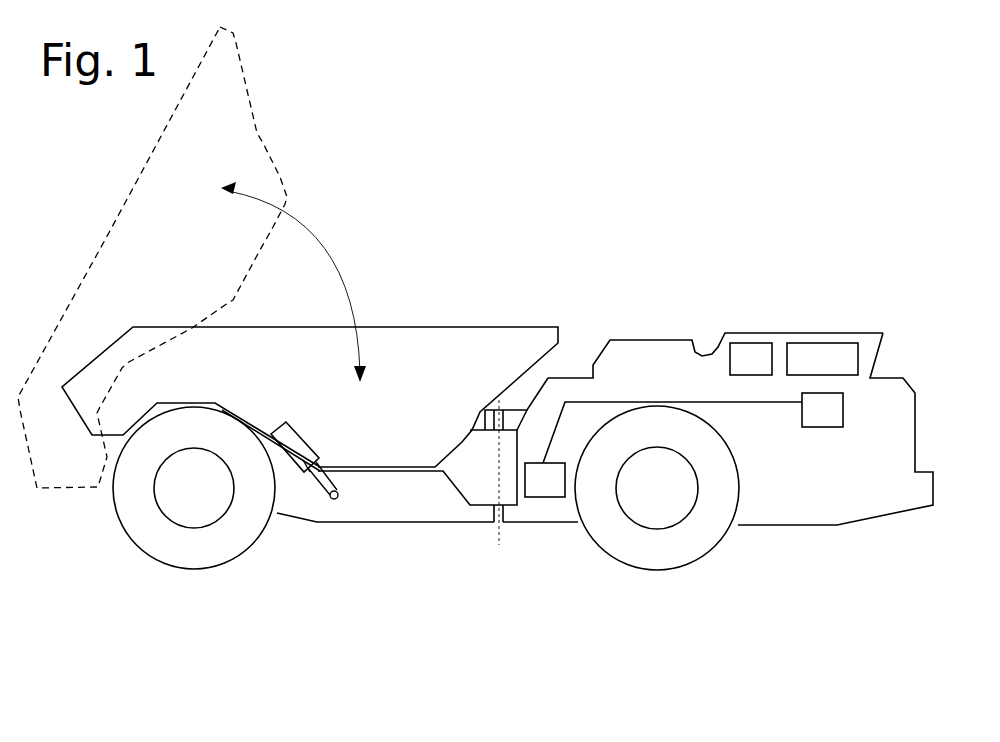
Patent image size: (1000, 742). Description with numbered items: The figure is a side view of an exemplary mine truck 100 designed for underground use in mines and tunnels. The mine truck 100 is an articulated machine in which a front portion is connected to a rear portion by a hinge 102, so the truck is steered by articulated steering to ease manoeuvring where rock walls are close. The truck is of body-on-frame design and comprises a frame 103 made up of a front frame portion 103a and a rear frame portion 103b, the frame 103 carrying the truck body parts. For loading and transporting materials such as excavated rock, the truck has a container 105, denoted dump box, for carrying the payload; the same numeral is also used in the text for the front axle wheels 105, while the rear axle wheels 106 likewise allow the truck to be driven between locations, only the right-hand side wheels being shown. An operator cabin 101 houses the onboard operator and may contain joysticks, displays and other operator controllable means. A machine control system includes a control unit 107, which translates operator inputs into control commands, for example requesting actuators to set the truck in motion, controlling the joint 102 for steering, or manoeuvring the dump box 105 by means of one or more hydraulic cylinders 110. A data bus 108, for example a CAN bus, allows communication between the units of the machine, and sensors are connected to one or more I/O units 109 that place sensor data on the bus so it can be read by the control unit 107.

The mine truck 100 is at (744, 117).
The operator cabin 101 is at (830, 350).
The hinge 102 is at (505, 489).
The frame 103 is at (523, 534).
The front frame portion 103a is at (765, 505).
The rear frame portion 103b is at (407, 510).
The container 105 is at (421, 350).
The rear axle wheels 106 is at (207, 545).
The control unit 107 is at (822, 432).
The data bus 108 is at (710, 402).
The I/O units 109 is at (548, 490).
The hydraulic cylinders 110 is at (312, 477).